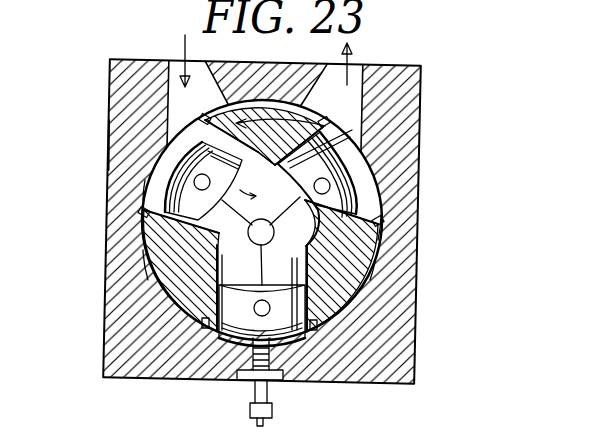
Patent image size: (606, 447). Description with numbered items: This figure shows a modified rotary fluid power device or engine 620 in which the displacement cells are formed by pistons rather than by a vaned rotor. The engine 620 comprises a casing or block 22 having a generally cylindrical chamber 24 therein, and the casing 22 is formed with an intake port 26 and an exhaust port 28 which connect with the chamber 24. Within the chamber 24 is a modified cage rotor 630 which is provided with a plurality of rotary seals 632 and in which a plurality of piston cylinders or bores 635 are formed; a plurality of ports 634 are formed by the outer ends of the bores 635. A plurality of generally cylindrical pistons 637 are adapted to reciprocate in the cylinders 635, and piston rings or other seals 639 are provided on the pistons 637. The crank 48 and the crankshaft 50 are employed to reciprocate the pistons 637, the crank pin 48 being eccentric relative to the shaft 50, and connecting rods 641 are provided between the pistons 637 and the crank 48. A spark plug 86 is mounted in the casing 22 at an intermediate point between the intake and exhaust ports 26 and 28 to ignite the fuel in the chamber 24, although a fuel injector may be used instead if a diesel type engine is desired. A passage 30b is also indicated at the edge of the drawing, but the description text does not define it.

The fluid power device or engine 620 is at (424, 66).
The intake port 26 is at (109, 82).
The exhaust port 28 is at (352, 98).
The casing or block 22 is at (100, 151).
The cylindrical chamber 24 is at (135, 187).
The passage 30b is at (66, 10).
The crank shaft 50 is at (280, 159).
The crank pin 48 is at (266, 244).
The cage rotor 630 is at (172, 257).
The rotary seals 632 is at (143, 212).
The ports 634 is at (162, 150).
The piston cylinders or bores 635 is at (170, 145).
The pistons 637 is at (172, 232).
The piston rings or seals 639 is at (150, 301).
The connecting rods 641 is at (372, 253).
The spark plug 86 is at (272, 394).